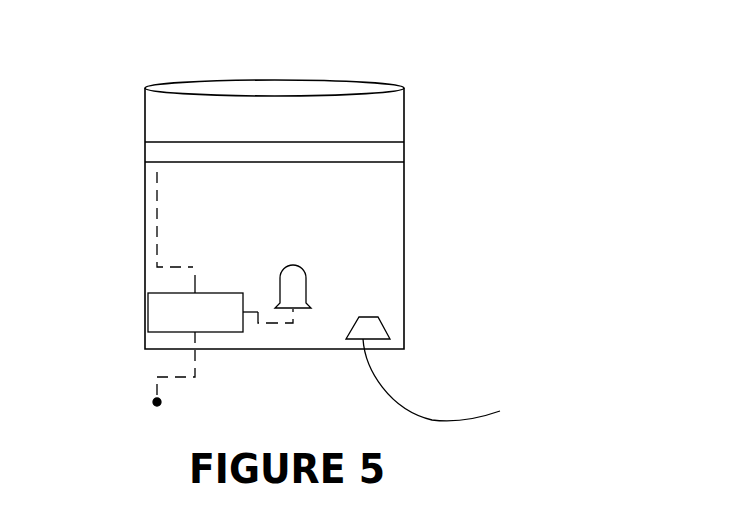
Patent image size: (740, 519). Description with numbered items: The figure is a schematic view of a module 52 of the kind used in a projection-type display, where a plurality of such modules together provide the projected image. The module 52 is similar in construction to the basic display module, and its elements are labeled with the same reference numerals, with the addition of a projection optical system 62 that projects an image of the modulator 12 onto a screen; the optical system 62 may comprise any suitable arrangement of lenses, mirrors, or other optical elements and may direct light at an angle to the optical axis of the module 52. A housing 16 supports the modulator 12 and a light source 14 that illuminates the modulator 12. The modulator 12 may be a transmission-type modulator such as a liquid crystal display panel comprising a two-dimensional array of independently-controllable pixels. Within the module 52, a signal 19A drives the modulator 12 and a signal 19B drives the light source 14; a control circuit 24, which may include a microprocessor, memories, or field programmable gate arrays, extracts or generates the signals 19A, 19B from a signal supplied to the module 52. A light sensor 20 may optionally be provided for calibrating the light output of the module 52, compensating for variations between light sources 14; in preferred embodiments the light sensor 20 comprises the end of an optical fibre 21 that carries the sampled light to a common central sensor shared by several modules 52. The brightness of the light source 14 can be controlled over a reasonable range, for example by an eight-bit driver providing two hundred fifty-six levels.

The module 52 is at (499, 45).
The projection optical system 62 is at (230, 80).
The modulator 12 is at (203, 142).
The housing 16 is at (404, 235).
The signal 19A is at (155, 217).
The signal 19B is at (258, 312).
The light source 14 is at (312, 290).
The control circuit 24 is at (195, 312).
The light sensor 20 is at (375, 331).
The optical fibre 21 is at (441, 421).